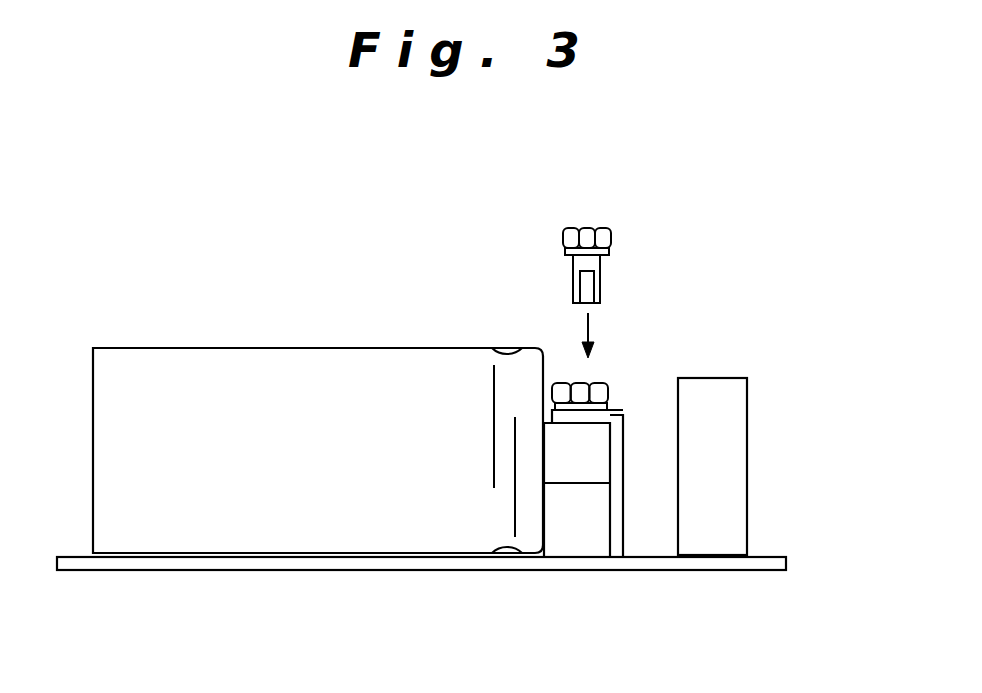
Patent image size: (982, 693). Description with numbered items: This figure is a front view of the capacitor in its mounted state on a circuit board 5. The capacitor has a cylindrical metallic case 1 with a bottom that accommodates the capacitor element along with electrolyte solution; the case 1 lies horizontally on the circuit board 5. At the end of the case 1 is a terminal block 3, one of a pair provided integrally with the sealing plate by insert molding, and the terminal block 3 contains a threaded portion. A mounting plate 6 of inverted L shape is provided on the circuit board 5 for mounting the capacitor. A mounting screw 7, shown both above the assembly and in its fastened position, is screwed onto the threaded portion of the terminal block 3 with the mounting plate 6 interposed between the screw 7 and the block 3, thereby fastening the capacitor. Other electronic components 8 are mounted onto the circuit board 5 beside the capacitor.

The metallic case 1 is at (247, 365).
The terminal block 3 is at (557, 470).
The circuit board 5 is at (773, 555).
The mounting plate 6 is at (620, 518).
The mounting screw 7 is at (593, 232).
The other electronic components 8 is at (747, 402).